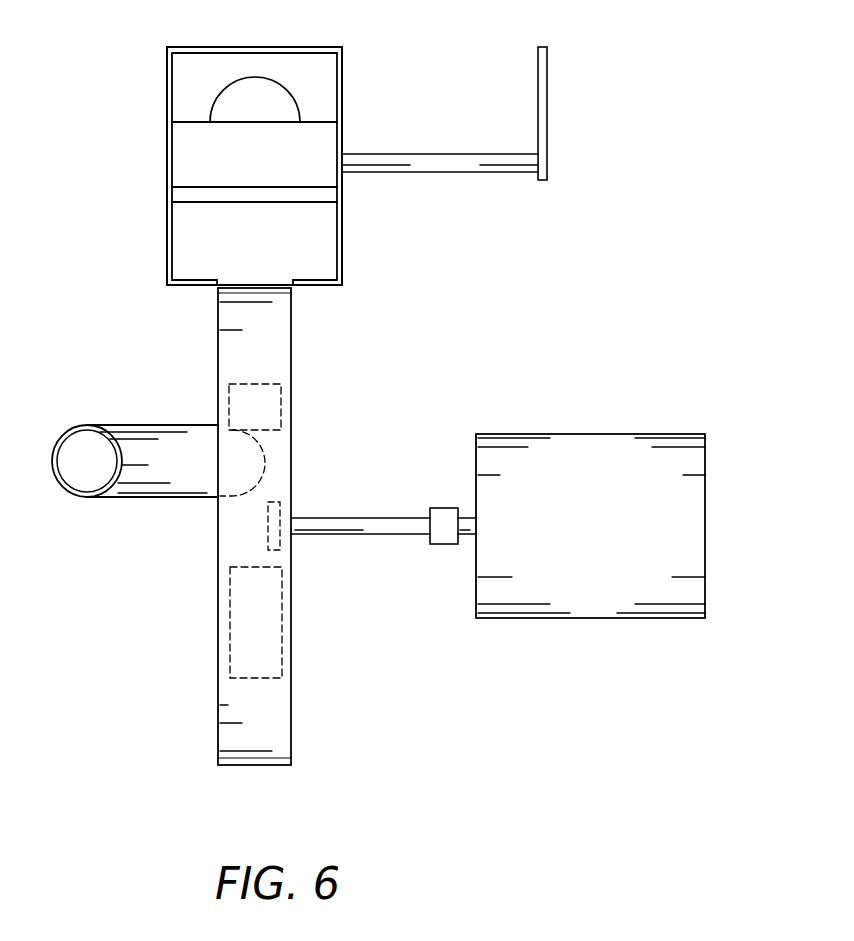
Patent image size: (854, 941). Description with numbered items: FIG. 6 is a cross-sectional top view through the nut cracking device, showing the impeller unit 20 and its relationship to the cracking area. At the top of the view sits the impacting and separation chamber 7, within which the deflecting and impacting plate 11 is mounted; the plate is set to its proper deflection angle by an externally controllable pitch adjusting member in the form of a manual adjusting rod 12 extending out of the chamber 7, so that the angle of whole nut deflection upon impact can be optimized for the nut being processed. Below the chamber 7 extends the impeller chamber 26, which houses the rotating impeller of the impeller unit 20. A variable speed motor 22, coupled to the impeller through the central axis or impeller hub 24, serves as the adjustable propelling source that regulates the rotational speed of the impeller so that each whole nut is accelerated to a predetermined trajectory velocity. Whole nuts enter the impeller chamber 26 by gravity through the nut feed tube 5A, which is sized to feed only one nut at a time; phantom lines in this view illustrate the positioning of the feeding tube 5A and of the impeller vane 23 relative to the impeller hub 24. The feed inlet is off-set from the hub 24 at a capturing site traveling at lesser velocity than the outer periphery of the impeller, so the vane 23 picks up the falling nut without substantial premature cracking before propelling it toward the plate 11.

The impacting and separation chamber 7 is at (165, 85).
The deflecting and impacting plate 11 is at (320, 145).
The manual adjusting rod 12 is at (455, 167).
The impeller unit 20 is at (292, 363).
The nut feed tube 5A is at (140, 488).
The impeller vane 23 is at (272, 605).
The impeller hub 24 is at (357, 518).
The variable speed motor 22 is at (575, 442).
The impeller chamber 26 is at (225, 705).